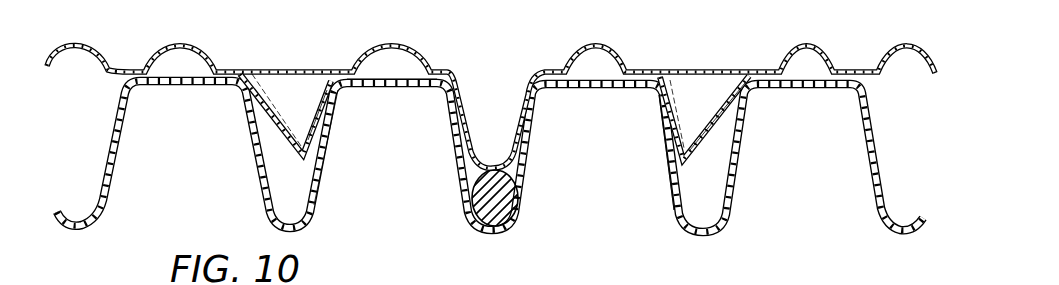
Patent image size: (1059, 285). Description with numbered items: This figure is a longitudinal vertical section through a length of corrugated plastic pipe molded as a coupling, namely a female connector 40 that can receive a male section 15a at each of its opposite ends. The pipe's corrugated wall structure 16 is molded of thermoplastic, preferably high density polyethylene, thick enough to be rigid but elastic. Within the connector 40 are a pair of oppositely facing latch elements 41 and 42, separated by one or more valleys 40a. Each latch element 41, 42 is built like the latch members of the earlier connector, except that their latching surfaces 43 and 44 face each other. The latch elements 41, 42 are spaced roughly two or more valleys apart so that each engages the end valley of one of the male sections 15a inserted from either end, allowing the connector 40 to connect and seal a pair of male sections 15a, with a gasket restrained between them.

The wall structure 16 is at (190, 85).
The male section 15a is at (407, 91).
The female connector 40 is at (440, 61).
The valley 40a is at (497, 113).
The latch element 41 is at (313, 100).
The latch element 42 is at (674, 78).
The latching surface 43 is at (331, 116).
The latching surface 44 is at (662, 123).